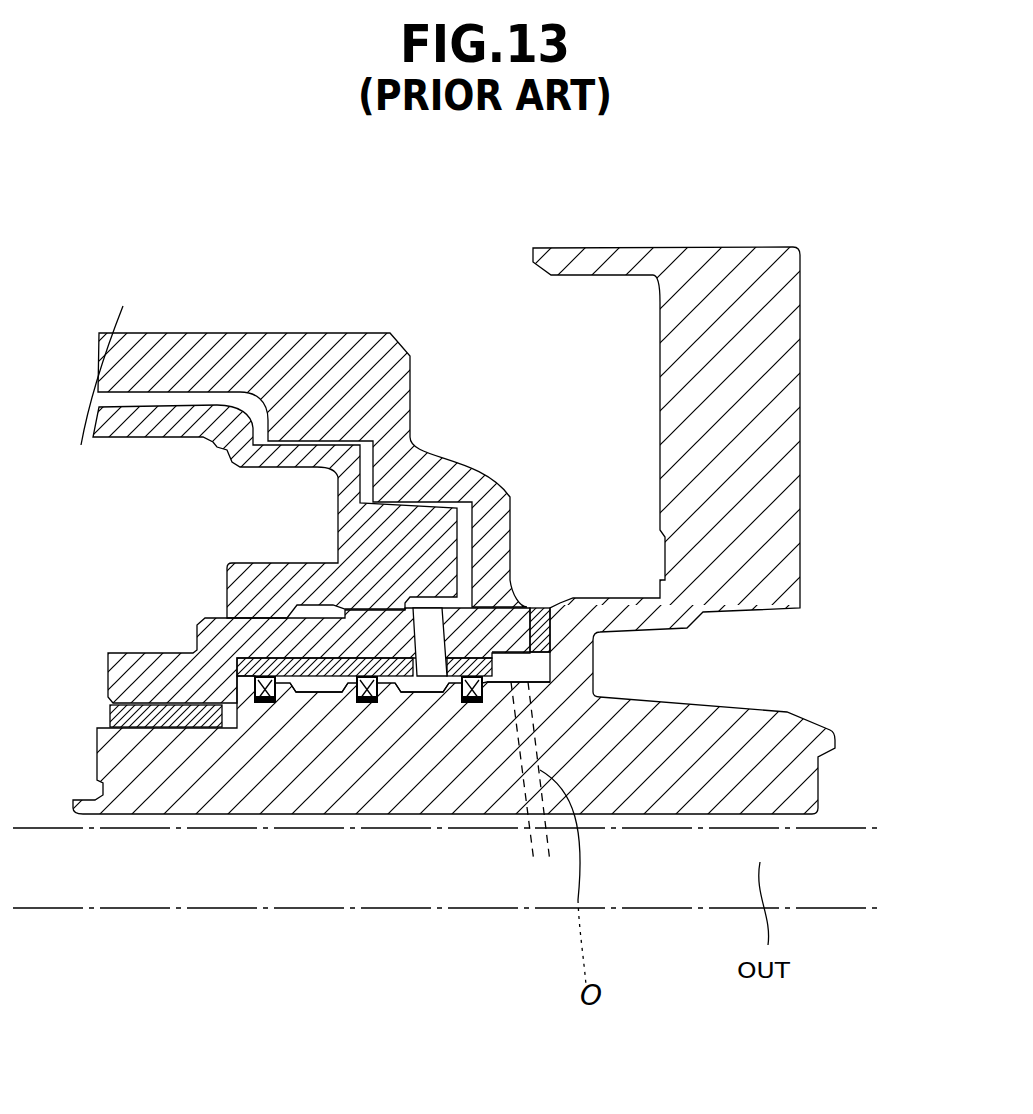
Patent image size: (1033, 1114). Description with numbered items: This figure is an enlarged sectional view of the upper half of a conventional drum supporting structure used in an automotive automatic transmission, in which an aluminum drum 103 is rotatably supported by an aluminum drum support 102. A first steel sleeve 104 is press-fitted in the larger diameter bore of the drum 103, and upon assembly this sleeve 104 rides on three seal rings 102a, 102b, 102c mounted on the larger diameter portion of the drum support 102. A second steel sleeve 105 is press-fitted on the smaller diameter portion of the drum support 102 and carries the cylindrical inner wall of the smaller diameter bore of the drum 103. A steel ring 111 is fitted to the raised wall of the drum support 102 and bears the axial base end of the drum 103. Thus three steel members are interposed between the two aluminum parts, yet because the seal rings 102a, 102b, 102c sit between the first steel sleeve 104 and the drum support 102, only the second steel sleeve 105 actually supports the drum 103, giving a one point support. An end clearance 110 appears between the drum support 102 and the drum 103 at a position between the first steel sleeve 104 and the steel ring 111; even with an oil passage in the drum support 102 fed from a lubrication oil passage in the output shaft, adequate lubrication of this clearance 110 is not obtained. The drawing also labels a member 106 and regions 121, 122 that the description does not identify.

The aluminum drum support 102 is at (747, 475).
The seal ring 102a is at (263, 705).
The seal ring 102b is at (366, 704).
The seal ring 102c is at (472, 704).
The aluminum drum 103 is at (382, 377).
The first steel sleeve 104 is at (290, 665).
The second steel sleeve 105 is at (167, 700).
The inner ring 106 is at (360, 532).
The end clearance 110 is at (530, 668).
The steel ring 111 is at (547, 603).
The first groove 121 is at (317, 682).
The second groove 122 is at (425, 682).